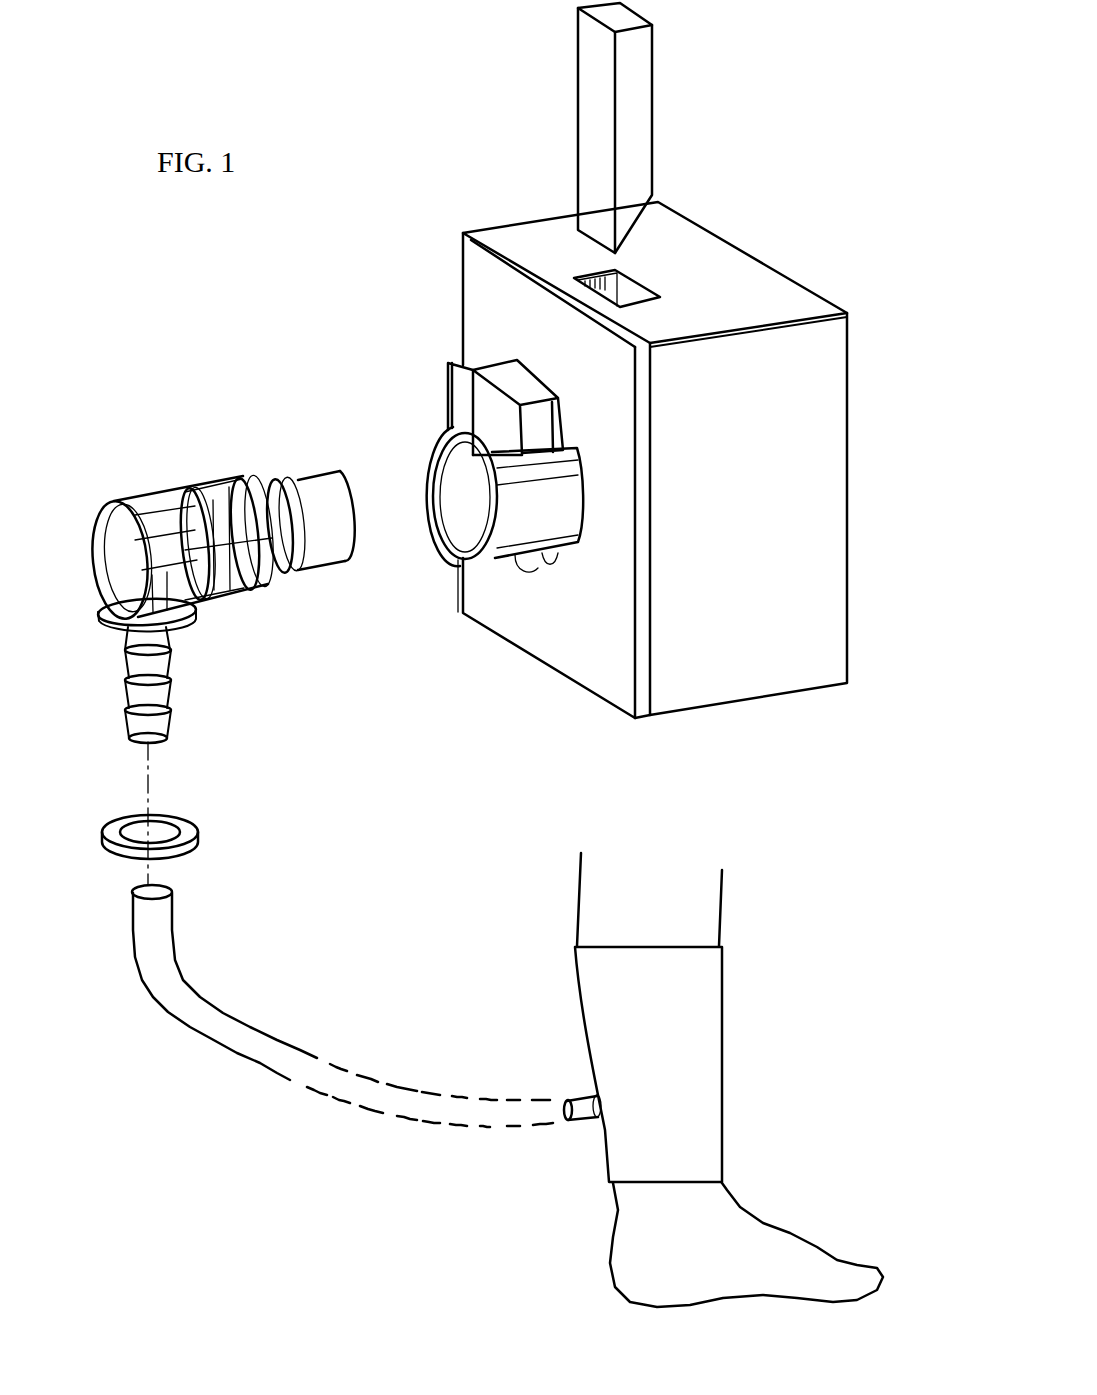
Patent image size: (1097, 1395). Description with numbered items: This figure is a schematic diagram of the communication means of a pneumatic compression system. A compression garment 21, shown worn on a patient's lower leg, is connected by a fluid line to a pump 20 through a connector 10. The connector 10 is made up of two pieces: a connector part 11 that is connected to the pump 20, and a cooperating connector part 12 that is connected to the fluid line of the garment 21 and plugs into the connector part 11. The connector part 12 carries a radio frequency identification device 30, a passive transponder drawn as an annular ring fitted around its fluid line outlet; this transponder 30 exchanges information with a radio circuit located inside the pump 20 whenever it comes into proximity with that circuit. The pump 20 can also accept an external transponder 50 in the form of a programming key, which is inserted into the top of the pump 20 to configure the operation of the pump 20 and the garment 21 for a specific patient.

The connector 10 is at (259, 519).
The connector part 11 is at (521, 523).
The cooperating connector part 12 is at (172, 638).
The pump 20 is at (672, 233).
The compression garment 21 is at (588, 996).
The radio frequency identification device 30 is at (198, 827).
The external transponder 50 is at (593, 115).